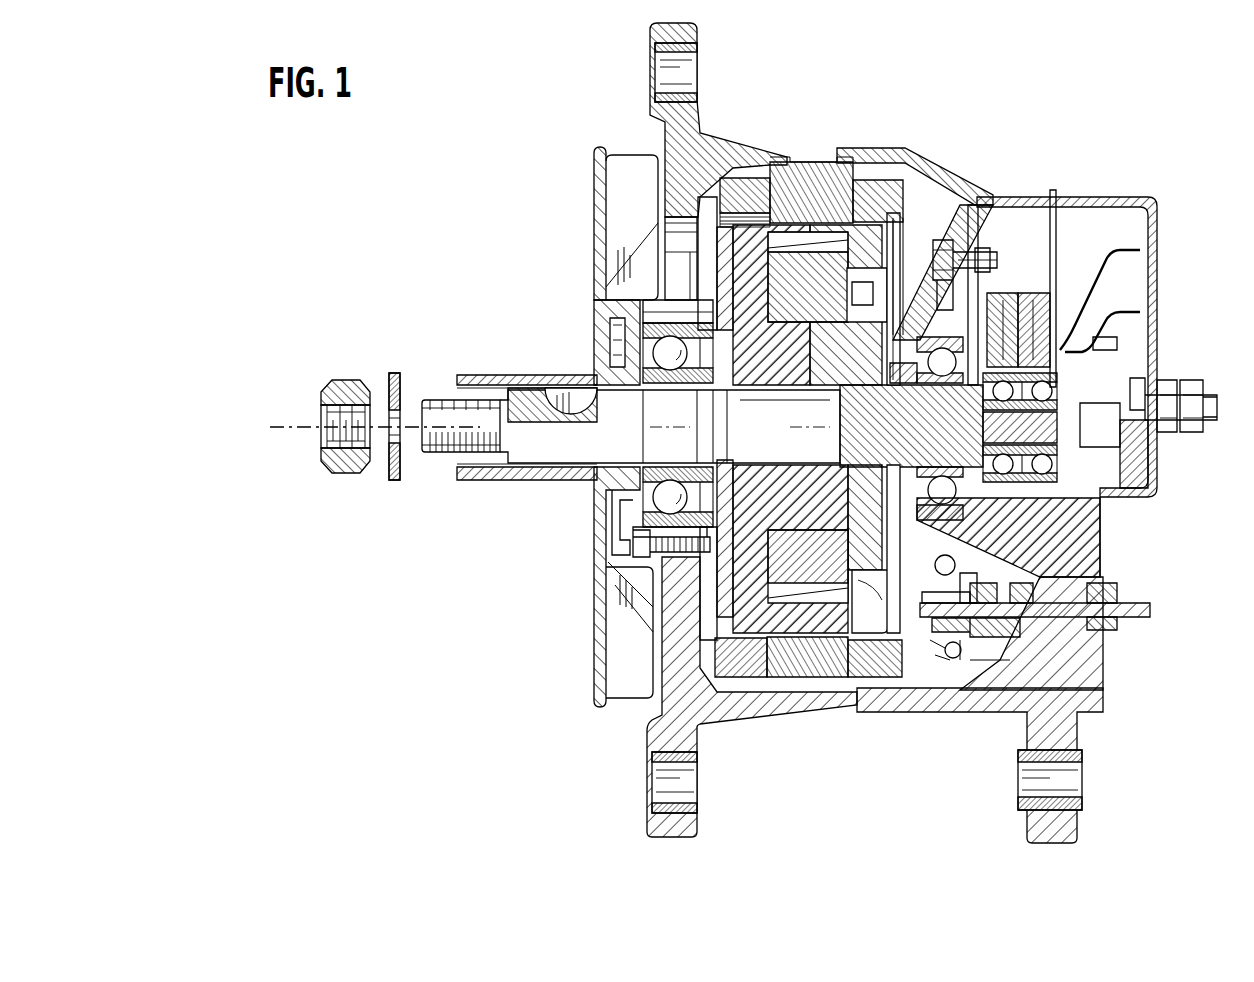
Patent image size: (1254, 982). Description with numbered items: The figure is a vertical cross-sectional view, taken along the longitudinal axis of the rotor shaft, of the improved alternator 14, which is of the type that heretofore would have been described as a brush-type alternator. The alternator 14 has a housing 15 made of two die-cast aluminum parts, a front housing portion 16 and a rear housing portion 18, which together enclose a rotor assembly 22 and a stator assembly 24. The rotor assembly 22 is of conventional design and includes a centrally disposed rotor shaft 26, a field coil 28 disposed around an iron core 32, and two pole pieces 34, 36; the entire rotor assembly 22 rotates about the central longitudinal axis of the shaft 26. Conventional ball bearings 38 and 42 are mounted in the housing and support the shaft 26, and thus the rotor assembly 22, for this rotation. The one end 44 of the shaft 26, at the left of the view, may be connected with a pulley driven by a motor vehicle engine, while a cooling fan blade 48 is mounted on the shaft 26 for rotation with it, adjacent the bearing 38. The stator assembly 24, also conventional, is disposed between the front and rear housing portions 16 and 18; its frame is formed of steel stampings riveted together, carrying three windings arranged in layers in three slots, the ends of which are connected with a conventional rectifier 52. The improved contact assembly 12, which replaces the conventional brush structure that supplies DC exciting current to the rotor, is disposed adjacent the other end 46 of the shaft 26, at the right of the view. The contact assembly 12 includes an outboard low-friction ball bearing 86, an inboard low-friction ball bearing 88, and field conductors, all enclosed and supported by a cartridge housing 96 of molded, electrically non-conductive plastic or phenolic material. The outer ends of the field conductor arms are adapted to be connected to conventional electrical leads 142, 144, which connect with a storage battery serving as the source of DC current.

The contact assembly 12 is at (1065, 382).
The alternator 14 is at (527, 104).
The housing 15 is at (868, 143).
The front housing portion 16 is at (718, 142).
The rear housing portion 18 is at (905, 275).
The rotor assembly 22 is at (756, 302).
The stator assembly 24 is at (890, 178).
The rotor shaft 26 is at (527, 417).
The field coil 28 is at (1010, 287).
The iron core 32 is at (827, 703).
The pole piece 34 is at (740, 617).
The pole piece 36 is at (873, 617).
The ball bearing 38 is at (683, 513).
The ball bearing 42 is at (957, 487).
The one end of the shaft 44 is at (443, 452).
The other end of the shaft 46 is at (1065, 470).
The cooling fan blade 48 is at (583, 659).
The rectifier 52 is at (1000, 575).
The outboard ball bearing 86 is at (1045, 455).
The inboard ball bearing 88 is at (880, 402).
The cartridge housing 96 is at (995, 235).
The electrical lead 142 is at (1100, 280).
The electrical lead 144 is at (1093, 250).